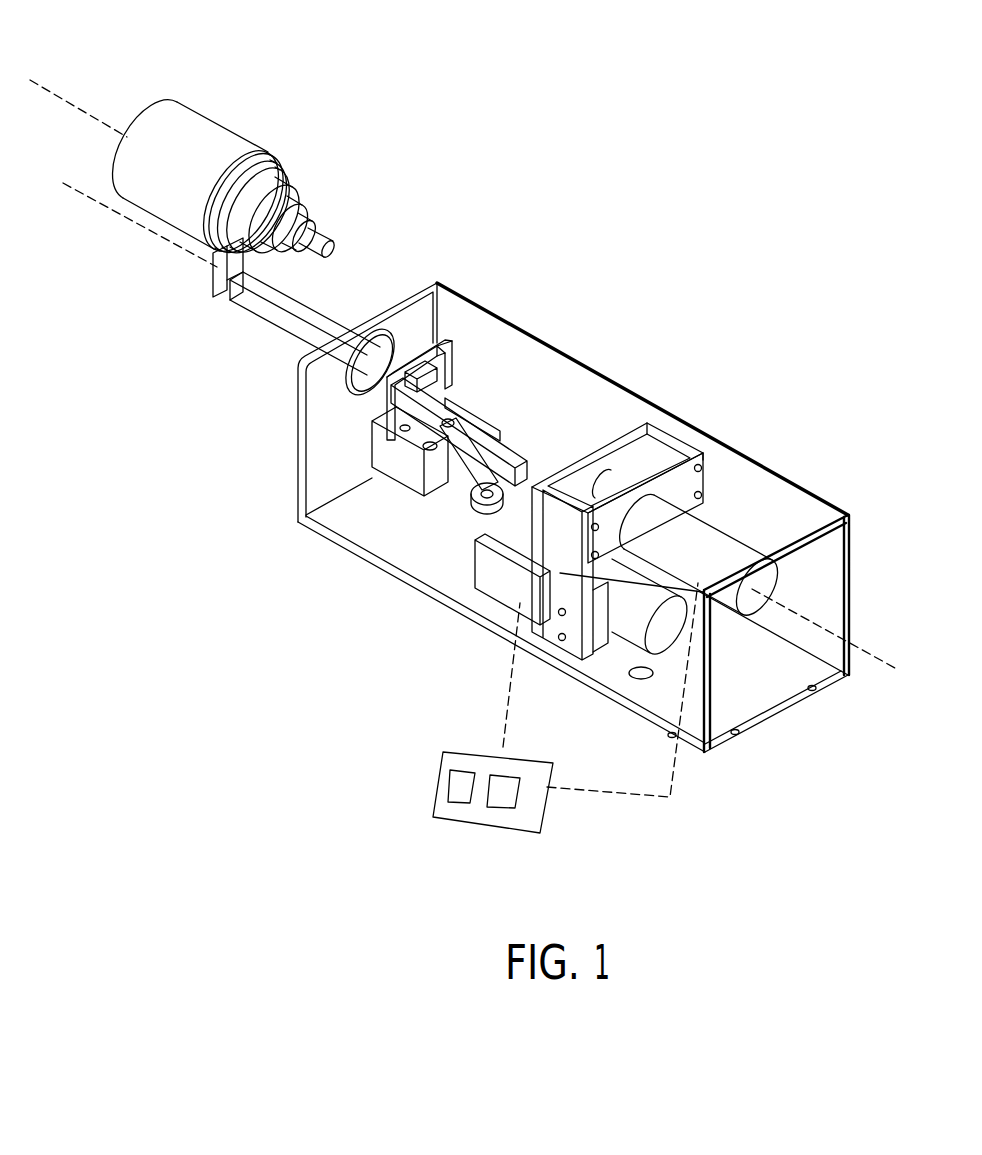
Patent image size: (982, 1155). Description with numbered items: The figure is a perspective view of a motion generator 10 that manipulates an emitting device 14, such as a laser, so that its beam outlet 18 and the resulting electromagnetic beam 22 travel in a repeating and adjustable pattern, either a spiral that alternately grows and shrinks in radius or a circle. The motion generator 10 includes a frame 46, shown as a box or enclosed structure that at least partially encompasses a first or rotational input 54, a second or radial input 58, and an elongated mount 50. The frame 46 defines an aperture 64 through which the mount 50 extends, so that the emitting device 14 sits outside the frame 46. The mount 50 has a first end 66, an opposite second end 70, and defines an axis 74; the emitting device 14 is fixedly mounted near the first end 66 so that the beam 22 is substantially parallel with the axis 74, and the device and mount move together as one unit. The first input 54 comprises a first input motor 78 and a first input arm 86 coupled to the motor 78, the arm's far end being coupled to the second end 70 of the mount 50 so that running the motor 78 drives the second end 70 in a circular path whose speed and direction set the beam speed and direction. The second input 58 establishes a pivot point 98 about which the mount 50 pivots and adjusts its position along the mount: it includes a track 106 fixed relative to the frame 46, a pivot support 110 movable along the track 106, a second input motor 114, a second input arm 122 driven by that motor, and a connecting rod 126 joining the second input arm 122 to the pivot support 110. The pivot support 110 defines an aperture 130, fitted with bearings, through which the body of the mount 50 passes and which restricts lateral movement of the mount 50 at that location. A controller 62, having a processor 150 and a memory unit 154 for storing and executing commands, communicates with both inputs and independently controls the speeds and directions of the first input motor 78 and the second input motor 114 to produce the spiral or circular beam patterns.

The motion generator 10 is at (694, 256).
The emitting device 14 is at (218, 130).
The beam outlet 18 is at (140, 122).
The electromagnetic beam 22 is at (56, 82).
The frame 46 is at (790, 680).
The mount 50 is at (322, 327).
The first input 54 is at (612, 490).
The second input 58 is at (500, 577).
The controller 62 is at (458, 820).
The aperture 64 is at (327, 332).
The first end 66 is at (232, 298).
The second end 70 is at (545, 447).
The axis 74 is at (145, 232).
The first input motor 78 is at (706, 535).
The first input arm 86 is at (577, 453).
The pivot point 98 is at (423, 385).
The track 106 is at (408, 487).
The pivot support 110 is at (442, 345).
The second input motor 114 is at (637, 612).
The second input arm 122 is at (512, 500).
The connecting rod 126 is at (455, 488).
The aperture 130 is at (484, 382).
The processor 150 is at (450, 785).
The memory unit 154 is at (520, 800).